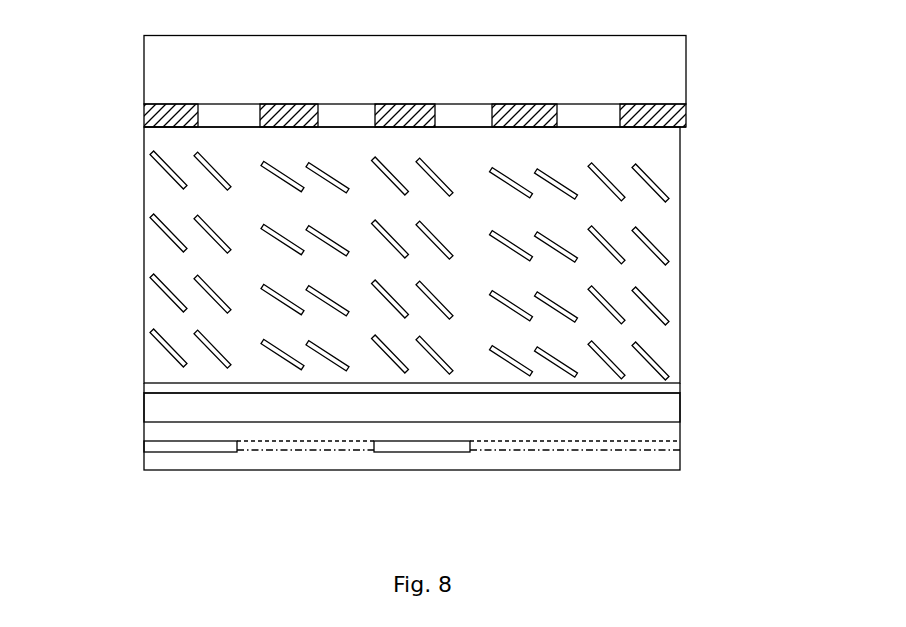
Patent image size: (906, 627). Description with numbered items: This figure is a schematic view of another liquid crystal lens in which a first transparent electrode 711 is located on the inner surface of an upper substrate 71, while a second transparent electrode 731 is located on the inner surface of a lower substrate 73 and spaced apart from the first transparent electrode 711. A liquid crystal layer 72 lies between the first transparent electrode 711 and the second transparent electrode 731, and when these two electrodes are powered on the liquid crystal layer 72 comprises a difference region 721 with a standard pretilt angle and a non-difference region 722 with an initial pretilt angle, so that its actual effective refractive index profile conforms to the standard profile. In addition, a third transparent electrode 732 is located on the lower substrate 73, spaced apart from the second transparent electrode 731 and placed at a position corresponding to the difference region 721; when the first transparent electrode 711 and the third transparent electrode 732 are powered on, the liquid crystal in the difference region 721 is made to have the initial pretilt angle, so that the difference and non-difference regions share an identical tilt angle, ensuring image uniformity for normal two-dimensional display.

The upper substrate 71 is at (686, 82).
The first transparent electrode 711 is at (147, 108).
The liquid crystal layer 72 is at (680, 212).
The difference region 721 is at (620, 376).
The non-difference region 722 is at (330, 253).
The lower substrate 73 is at (680, 432).
The second transparent electrode 731 is at (144, 410).
The third transparent electrode 732 is at (144, 455).